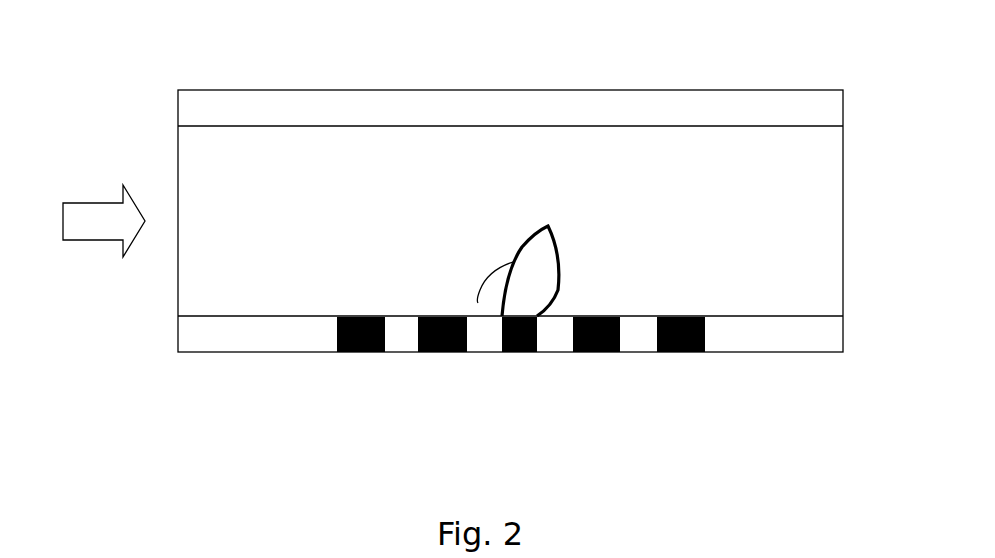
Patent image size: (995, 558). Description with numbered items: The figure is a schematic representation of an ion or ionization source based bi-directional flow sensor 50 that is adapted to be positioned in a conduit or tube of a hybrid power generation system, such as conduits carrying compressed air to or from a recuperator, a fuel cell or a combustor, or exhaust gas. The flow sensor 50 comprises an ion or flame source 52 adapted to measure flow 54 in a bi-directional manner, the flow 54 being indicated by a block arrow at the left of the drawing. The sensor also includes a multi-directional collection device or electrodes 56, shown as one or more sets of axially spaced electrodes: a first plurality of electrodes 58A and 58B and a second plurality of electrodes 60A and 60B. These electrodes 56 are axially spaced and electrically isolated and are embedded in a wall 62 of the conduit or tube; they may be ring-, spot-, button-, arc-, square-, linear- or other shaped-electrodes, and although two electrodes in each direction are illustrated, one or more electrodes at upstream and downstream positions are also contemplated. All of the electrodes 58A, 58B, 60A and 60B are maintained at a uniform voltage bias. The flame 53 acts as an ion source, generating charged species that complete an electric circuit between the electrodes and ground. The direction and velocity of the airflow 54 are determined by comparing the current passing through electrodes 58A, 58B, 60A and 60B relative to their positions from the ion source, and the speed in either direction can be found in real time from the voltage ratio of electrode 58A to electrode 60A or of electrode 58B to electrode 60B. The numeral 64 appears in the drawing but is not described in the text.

The bi-directional flow sensor 50 is at (620, 79).
The ion or flame source 52 is at (532, 353).
The flame 53 is at (478, 303).
The flow 54 is at (102, 233).
The multi-directional collection device or electrodes 56 is at (427, 296).
The first plurality of electrodes 58A is at (442, 353).
The first plurality of electrodes 58B is at (608, 353).
The second plurality of electrodes 60A is at (372, 353).
The second plurality of electrodes 60B is at (703, 353).
The wall 62 is at (405, 95).
The substrate 64 is at (692, 557).